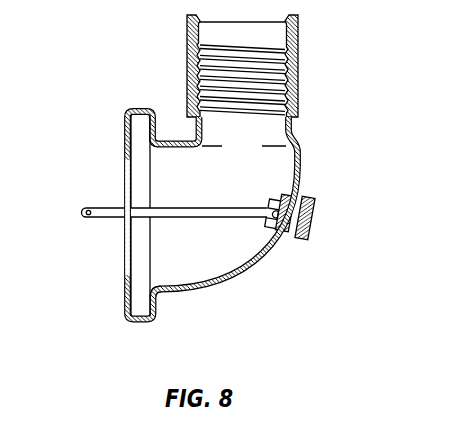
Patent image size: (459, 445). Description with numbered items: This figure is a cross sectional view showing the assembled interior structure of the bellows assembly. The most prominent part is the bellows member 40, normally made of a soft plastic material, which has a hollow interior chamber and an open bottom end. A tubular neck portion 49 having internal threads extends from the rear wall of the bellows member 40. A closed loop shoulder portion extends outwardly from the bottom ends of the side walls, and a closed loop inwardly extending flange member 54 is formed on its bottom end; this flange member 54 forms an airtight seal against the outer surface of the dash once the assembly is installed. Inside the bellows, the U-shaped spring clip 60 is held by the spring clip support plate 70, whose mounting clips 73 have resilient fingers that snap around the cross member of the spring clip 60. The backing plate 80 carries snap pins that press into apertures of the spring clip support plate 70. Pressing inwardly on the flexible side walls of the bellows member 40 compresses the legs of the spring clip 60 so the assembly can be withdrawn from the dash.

The bellows member 40 is at (210, 295).
The tubular neck portion 49 is at (187, 70).
The inwardly extending flange member 54 is at (124, 300).
The U-shaped spring clip 60 is at (106, 227).
The spring clip support plate 70 is at (266, 235).
The mounting clip 73 is at (266, 190).
The backing plate 80 is at (317, 225).